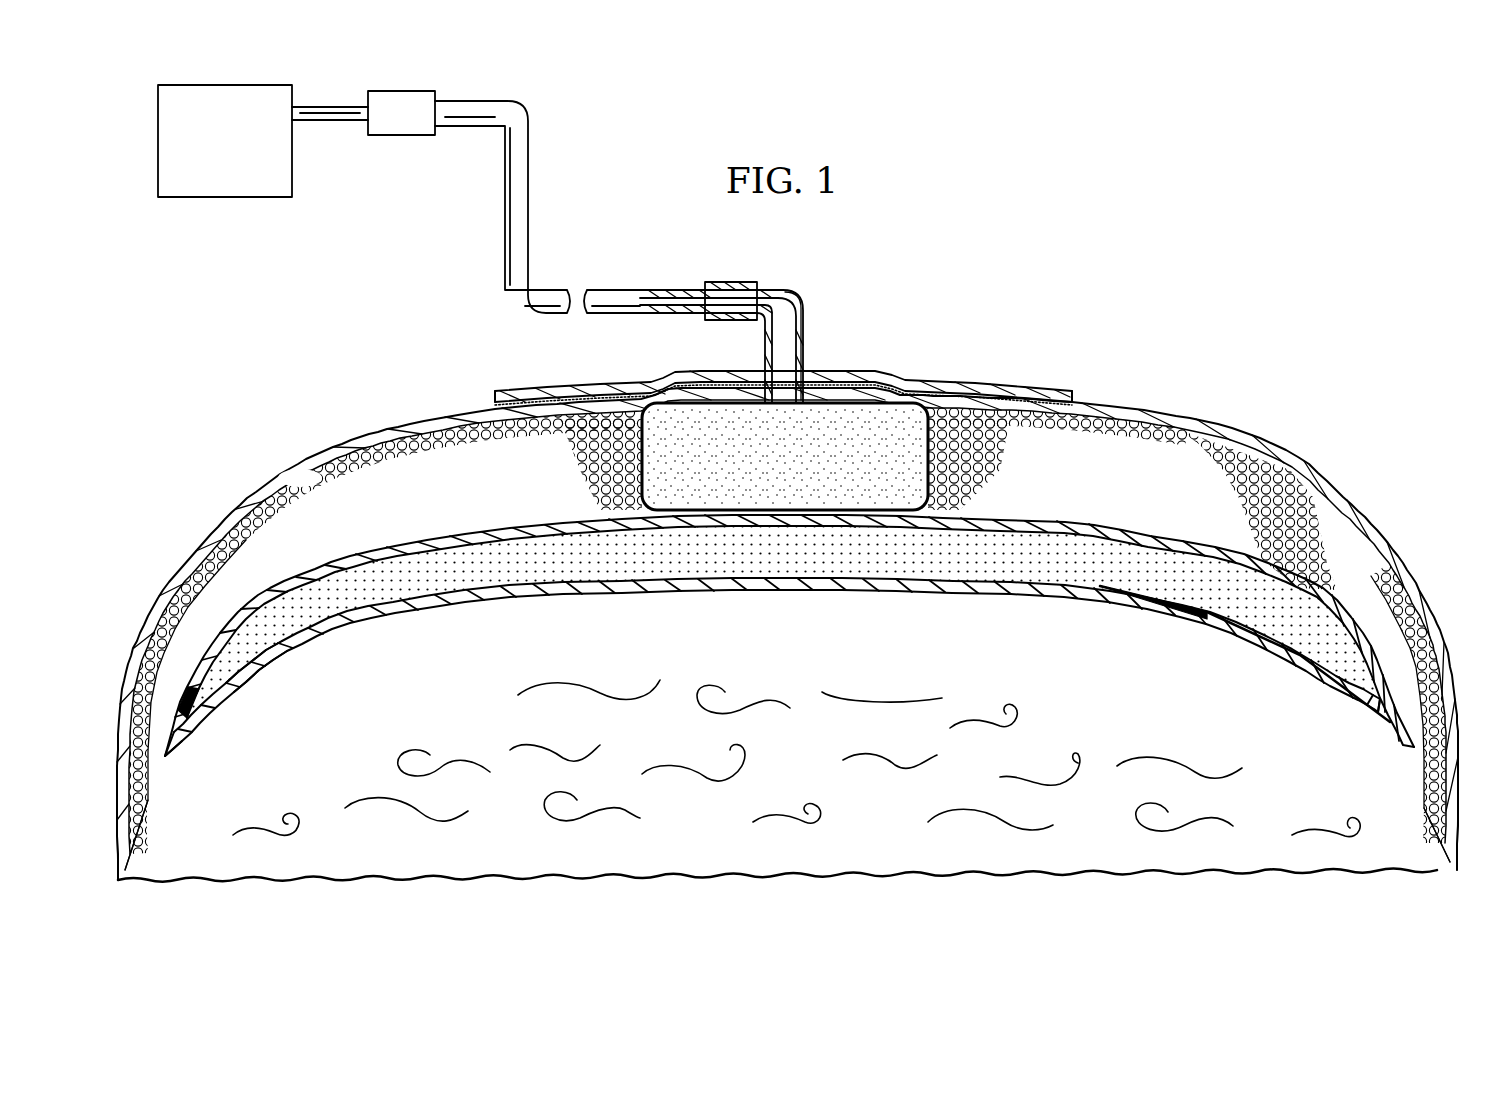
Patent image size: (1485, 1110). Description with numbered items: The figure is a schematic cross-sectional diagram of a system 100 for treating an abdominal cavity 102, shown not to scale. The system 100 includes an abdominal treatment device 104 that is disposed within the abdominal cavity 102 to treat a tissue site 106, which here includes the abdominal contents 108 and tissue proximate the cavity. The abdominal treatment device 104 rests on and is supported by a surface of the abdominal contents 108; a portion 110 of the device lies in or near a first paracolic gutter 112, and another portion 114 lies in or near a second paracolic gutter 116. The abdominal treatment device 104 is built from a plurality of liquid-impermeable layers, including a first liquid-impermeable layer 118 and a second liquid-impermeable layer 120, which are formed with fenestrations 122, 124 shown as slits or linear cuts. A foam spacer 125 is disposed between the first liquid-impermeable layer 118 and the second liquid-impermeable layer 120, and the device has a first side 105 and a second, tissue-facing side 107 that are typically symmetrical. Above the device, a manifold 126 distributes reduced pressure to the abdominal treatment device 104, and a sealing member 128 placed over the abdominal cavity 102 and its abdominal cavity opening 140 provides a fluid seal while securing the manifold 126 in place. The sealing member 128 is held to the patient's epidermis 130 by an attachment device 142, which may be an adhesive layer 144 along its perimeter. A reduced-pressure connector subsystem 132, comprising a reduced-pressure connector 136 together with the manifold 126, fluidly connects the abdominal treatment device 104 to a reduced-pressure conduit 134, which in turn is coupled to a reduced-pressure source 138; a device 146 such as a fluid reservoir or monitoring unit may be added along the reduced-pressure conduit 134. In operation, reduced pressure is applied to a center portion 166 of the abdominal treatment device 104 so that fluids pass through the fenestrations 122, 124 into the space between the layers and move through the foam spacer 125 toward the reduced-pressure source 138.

The system 100 is at (787, 544).
The abdominal cavity 102 is at (1051, 520).
The abdominal treatment device 104 is at (498, 522).
The first side 105 is at (262, 590).
The tissue site 106 is at (866, 614).
The second, tissue-facing side 107 is at (273, 672).
The abdominal contents 108 is at (767, 650).
The portion 110 is at (186, 760).
The first paracolic gutter 112 is at (152, 778).
The another portion 114 is at (1372, 728).
The second paracolic gutter 116 is at (1418, 766).
The first liquid-impermeable layer 118 is at (362, 540).
The second liquid-impermeable layer 120 is at (376, 633).
The fenestrations 122 is at (446, 528).
The fenestrations 124 is at (455, 605).
The foam spacer 125 is at (1340, 660).
The manifold 126 is at (785, 456).
The sealing member 128 is at (590, 388).
The epidermis 130 is at (1263, 443).
The reduced-pressure connector subsystem 132 is at (808, 298).
The reduced-pressure conduit 134 is at (337, 106).
The reduced-pressure connector 136 is at (745, 282).
The reduced-pressure source 138 is at (206, 151).
The abdominal cavity opening 140 is at (645, 397).
The attachment device 142 is at (1074, 404).
The adhesive layer 144 is at (502, 406).
The device 146 is at (404, 90).
The center portion 166 is at (768, 505).